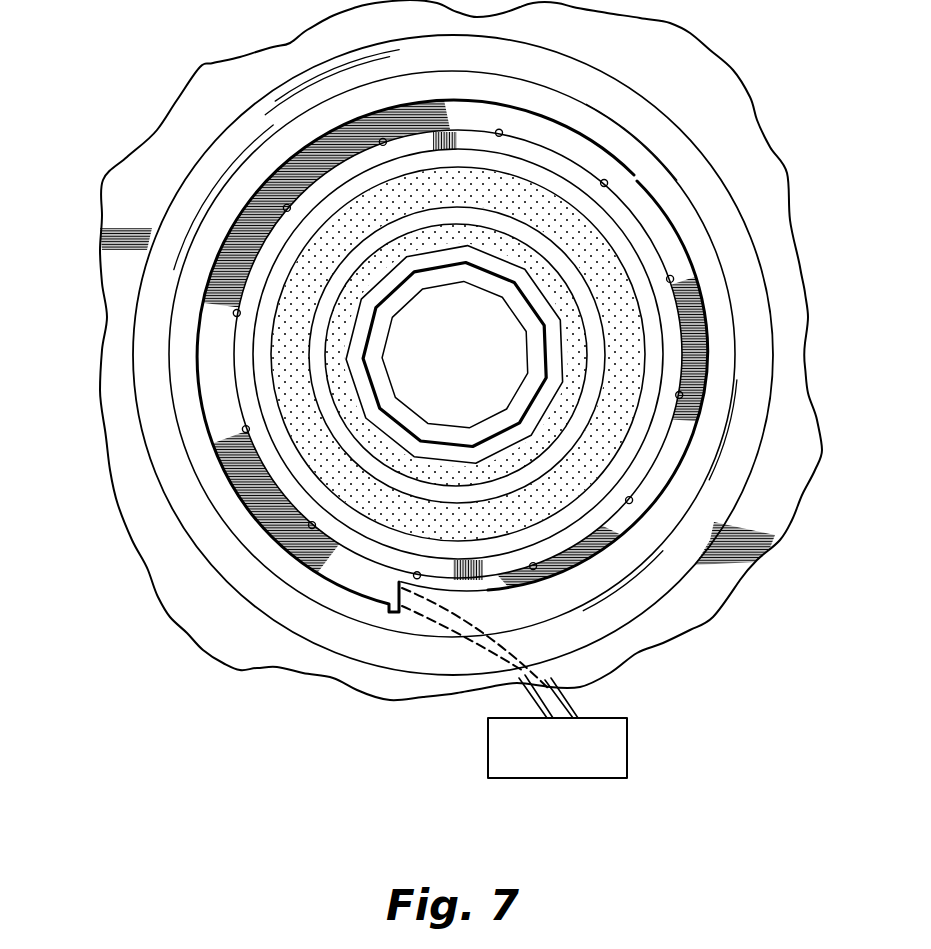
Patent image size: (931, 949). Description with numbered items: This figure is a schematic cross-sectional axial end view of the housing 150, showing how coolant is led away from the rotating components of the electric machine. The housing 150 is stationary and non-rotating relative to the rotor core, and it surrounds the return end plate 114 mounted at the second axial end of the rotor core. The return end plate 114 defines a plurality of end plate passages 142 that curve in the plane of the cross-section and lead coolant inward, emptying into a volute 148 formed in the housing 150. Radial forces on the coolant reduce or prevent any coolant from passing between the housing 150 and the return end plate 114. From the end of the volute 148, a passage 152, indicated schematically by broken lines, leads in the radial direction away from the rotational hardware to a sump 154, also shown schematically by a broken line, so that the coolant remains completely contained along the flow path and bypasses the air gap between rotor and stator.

The return end plate 114 is at (637, 243).
The end plate passages 142 is at (500, 133).
The volute 148 is at (215, 385).
The housing 150 is at (667, 617).
The passage 152 is at (487, 645).
The sump 154 is at (627, 748).